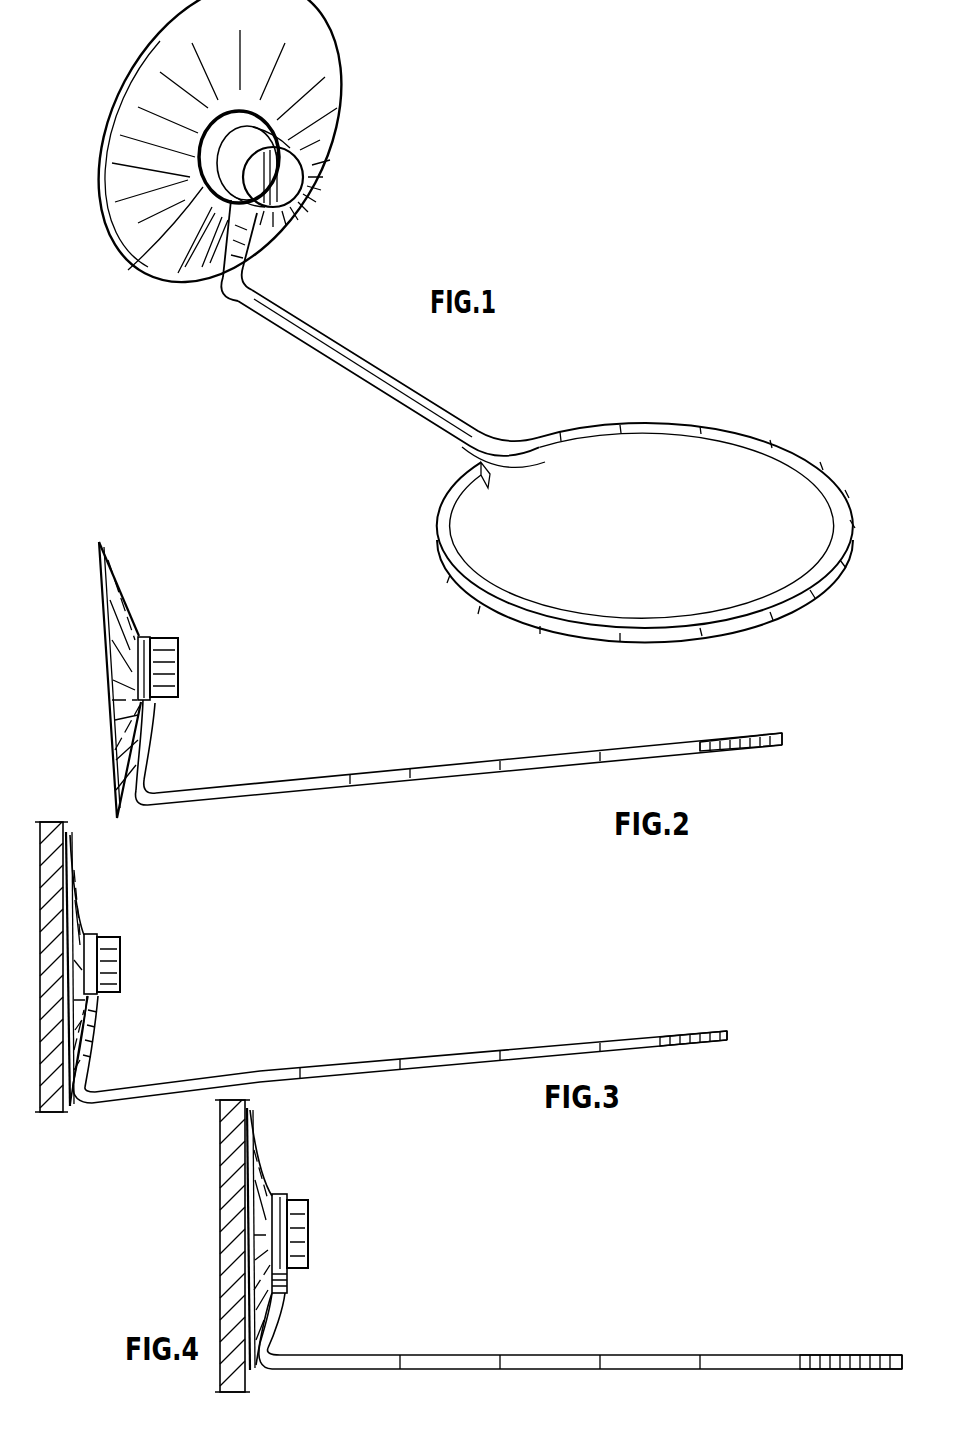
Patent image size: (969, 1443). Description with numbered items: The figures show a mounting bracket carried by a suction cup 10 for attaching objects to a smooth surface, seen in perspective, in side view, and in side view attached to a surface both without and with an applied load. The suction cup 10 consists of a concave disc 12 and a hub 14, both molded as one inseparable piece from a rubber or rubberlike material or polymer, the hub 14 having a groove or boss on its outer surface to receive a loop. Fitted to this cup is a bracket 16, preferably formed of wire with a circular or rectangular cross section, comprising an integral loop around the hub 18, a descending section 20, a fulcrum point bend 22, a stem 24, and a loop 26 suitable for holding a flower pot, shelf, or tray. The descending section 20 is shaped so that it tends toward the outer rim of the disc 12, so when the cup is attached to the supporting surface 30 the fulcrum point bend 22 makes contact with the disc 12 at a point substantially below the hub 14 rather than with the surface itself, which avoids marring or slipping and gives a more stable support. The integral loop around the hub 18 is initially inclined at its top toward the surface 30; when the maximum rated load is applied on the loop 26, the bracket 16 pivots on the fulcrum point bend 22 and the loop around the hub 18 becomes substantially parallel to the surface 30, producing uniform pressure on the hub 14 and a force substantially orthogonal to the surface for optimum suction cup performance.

In FIG. 1, the suction cup 10 is at (364, 82).
In FIG. 1, the concave disc 12 is at (325, 129).
In FIG. 2, the concave disc 12 is at (112, 584).
In FIG. 3, the concave disc 12 is at (76, 878).
In FIG. 4, the concave disc 12 is at (262, 1152).
In FIG. 1, the hub 14 is at (287, 177).
In FIG. 2, the hub 14 is at (180, 660).
In FIG. 3, the hub 14 is at (122, 960).
In FIG. 4, the hub 14 is at (308, 1232).
In FIG. 1, the bracket 16 is at (468, 404).
In FIG. 2, the bracket 16 is at (494, 748).
In FIG. 3, the bracket 16 is at (378, 1056).
In FIG. 4, the bracket 16 is at (584, 1358).
In FIG. 1, the integral loop around the hub 18 is at (128, 270).
In FIG. 2, the integral loop around the hub 18 is at (145, 638).
In FIG. 3, the integral loop around the hub 18 is at (90, 934).
In FIG. 4, the integral loop around the hub 18 is at (284, 1194).
In FIG. 1, the descending section 20 is at (250, 262).
In FIG. 2, the descending section 20 is at (160, 762).
In FIG. 3, the descending section 20 is at (96, 1050).
In FIG. 4, the descending section 20 is at (288, 1323).
In FIG. 1, the fulcrum point bend 22 is at (222, 298).
In FIG. 2, the fulcrum point bend 22 is at (130, 802).
In FIG. 3, the fulcrum point bend 22 is at (76, 1106).
In FIG. 4, the fulcrum point bend 22 is at (256, 1364).
In FIG. 1, the stem 24 is at (330, 355).
In FIG. 2, the stem 24 is at (364, 770).
In FIG. 3, the stem 24 is at (270, 1062).
In FIG. 4, the stem 24 is at (464, 1352).
In FIG. 1, the loop 26 is at (735, 430).
In FIG. 2, the loop 26 is at (690, 738).
In FIG. 3, the loop 26 is at (668, 1032).
In FIG. 4, the loop 26 is at (752, 1355).
In FIG. 3, the supporting surface 30 is at (55, 822).
In FIG. 4, the supporting surface 30 is at (228, 1238).